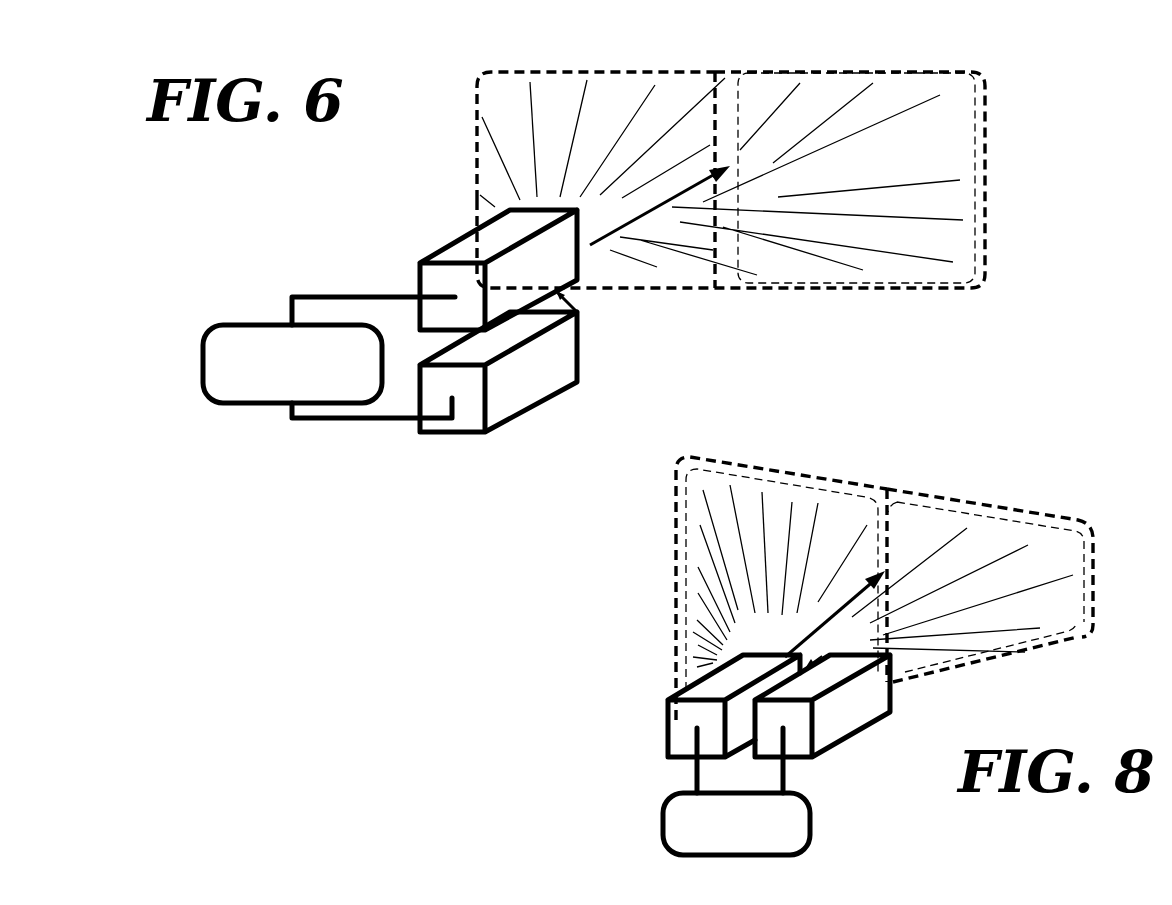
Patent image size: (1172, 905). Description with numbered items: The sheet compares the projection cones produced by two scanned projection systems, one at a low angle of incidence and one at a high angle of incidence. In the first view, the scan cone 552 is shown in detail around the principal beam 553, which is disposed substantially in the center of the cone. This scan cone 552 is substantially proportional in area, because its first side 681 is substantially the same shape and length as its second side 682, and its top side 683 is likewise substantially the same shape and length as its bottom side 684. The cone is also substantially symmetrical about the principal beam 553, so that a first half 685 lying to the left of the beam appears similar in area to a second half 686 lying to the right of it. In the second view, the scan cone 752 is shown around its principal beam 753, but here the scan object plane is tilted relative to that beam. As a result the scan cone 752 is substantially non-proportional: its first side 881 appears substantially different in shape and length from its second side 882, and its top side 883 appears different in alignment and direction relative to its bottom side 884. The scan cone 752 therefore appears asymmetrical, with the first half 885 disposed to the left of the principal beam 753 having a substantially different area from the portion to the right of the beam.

In FIG. 6, the scan cone 552 is at (740, 53).
In FIG. 6, the principal beam 553 is at (663, 202).
In FIG. 6, the first side 681 is at (985, 212).
In FIG. 6, the second side 682 is at (477, 128).
In FIG. 6, the top side 683 is at (592, 73).
In FIG. 6, the bottom side 684 is at (875, 288).
In FIG. 6, the first half 685 is at (560, 100).
In FIG. 6, the second half 686 is at (943, 118).
In FIG. 8, the scan cone 752 is at (888, 468).
In FIG. 8, the principal beam 753 is at (832, 618).
In FIG. 8, the first side 881 is at (1060, 563).
In FIG. 8, the second side 882 is at (675, 556).
In FIG. 8, the top side 883 is at (803, 482).
In FIG. 8, the bottom side 884 is at (1022, 650).
In FIG. 8, the first half 885 is at (775, 498).